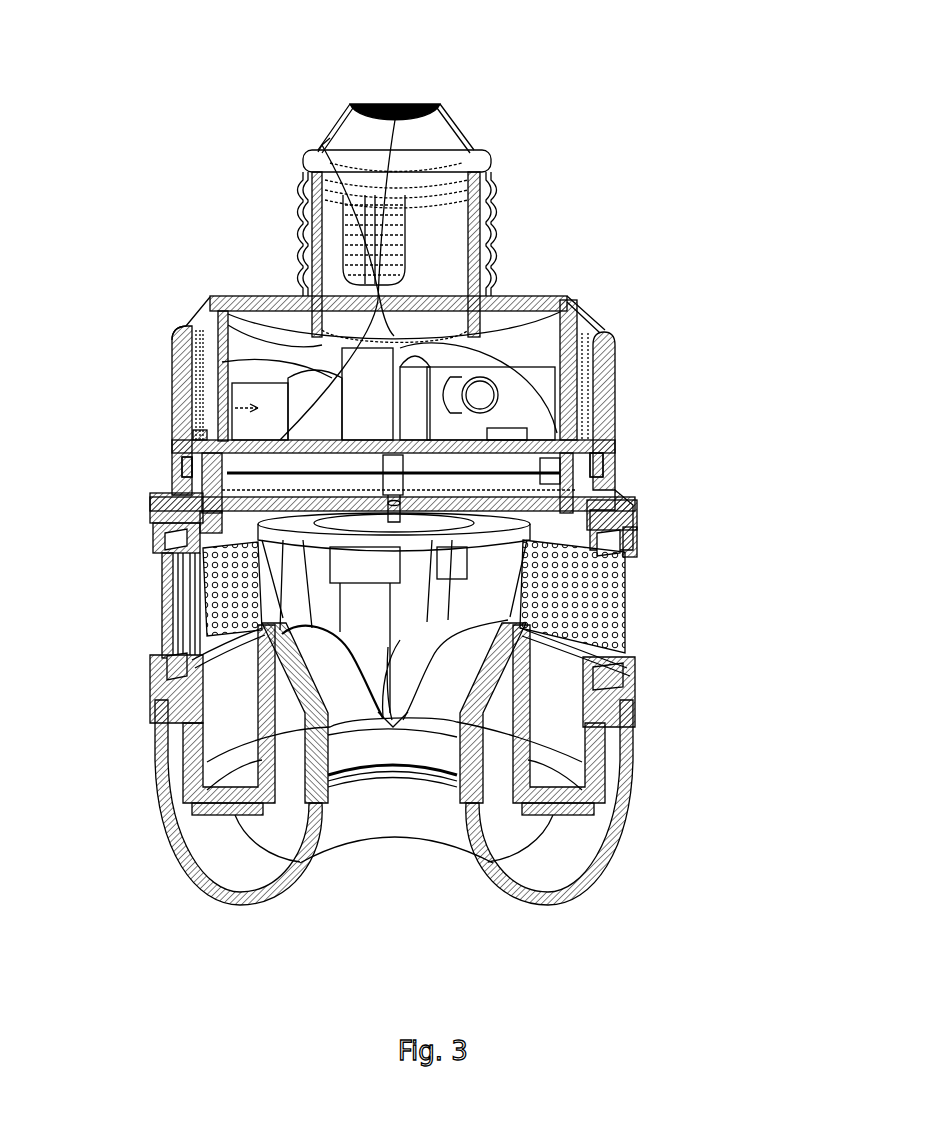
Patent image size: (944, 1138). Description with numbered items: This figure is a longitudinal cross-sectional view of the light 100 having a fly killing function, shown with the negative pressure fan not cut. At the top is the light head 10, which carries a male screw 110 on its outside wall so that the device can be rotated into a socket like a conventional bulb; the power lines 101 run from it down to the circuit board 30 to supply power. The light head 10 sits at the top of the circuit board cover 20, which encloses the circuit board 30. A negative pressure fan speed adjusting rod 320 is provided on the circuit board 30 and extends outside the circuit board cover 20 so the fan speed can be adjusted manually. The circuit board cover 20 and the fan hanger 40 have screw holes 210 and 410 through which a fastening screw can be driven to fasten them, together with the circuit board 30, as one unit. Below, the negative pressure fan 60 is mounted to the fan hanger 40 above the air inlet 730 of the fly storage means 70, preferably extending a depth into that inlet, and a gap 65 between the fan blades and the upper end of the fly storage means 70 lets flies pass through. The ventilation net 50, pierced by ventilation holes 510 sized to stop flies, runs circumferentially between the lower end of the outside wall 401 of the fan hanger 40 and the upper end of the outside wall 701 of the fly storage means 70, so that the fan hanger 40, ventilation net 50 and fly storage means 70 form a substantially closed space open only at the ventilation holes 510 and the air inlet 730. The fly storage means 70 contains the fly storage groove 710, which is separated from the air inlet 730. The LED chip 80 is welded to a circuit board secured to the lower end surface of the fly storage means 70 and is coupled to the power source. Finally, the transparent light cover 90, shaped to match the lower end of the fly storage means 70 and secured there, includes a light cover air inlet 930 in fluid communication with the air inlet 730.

The light having a fly killing function 100 is at (405, 78).
The power lines 101 is at (340, 150).
The light head 10 is at (478, 136).
The male screw 110 is at (497, 228).
The negative pressure fan speed adjusting rod 320 is at (485, 385).
The screw hole 210 is at (600, 305).
The circuit board cover 20 is at (617, 392).
The circuit board 30 is at (170, 403).
The outside wall of the fan hanger 401 is at (168, 482).
The fan hanger 40 is at (163, 523).
The screw hole 410 is at (622, 520).
The gap 65 is at (182, 590).
The ventilation net 50 is at (165, 625).
The negative pressure fan 60 is at (625, 592).
The ventilation holes 510 is at (405, 620).
The outside wall of the fly storage means 701 is at (162, 687).
The air inlet 730 is at (447, 712).
The fly storage groove 710 is at (220, 750).
The fly storage means 70 is at (640, 716).
The transparent light cover 90 is at (625, 836).
The LED chip 80 is at (220, 813).
The light cover air inlet 930 is at (390, 887).